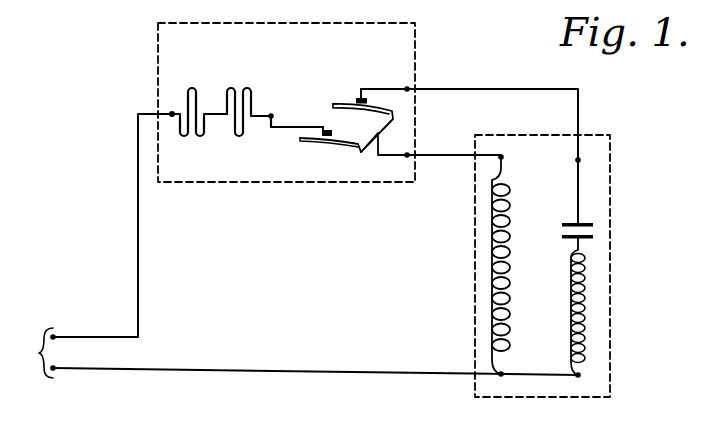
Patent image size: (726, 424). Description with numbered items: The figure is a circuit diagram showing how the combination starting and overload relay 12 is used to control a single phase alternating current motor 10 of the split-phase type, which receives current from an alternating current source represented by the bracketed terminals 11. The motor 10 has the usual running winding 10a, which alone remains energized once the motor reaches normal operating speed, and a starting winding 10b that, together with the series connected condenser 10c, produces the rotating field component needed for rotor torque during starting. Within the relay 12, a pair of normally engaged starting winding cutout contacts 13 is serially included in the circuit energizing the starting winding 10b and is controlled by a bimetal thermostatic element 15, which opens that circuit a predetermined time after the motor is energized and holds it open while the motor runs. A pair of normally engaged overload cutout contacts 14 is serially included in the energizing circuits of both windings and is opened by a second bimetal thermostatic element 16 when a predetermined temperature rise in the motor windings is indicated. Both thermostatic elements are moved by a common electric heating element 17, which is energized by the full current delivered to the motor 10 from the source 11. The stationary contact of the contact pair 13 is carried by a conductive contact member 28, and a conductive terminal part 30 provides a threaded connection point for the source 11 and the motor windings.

The single phase alternating current motor 10 is at (611, 333).
The running winding 10a is at (492, 283).
The starting winding 10b is at (587, 277).
The condenser 10c is at (592, 223).
The bracketed terminals 11 is at (295, 246).
The combination starting and overload relay 12 is at (419, 39).
The starting winding cutout contacts 13 is at (351, 98).
The overload cutout contacts 14 is at (334, 134).
The bimetal thermostatic element 15 is at (333, 106).
The second bimetal thermostatic element 16 is at (313, 143).
The electric heating element 17 is at (206, 93).
The conductive contact member 28 is at (401, 88).
The conductive terminal part 30 is at (172, 112).